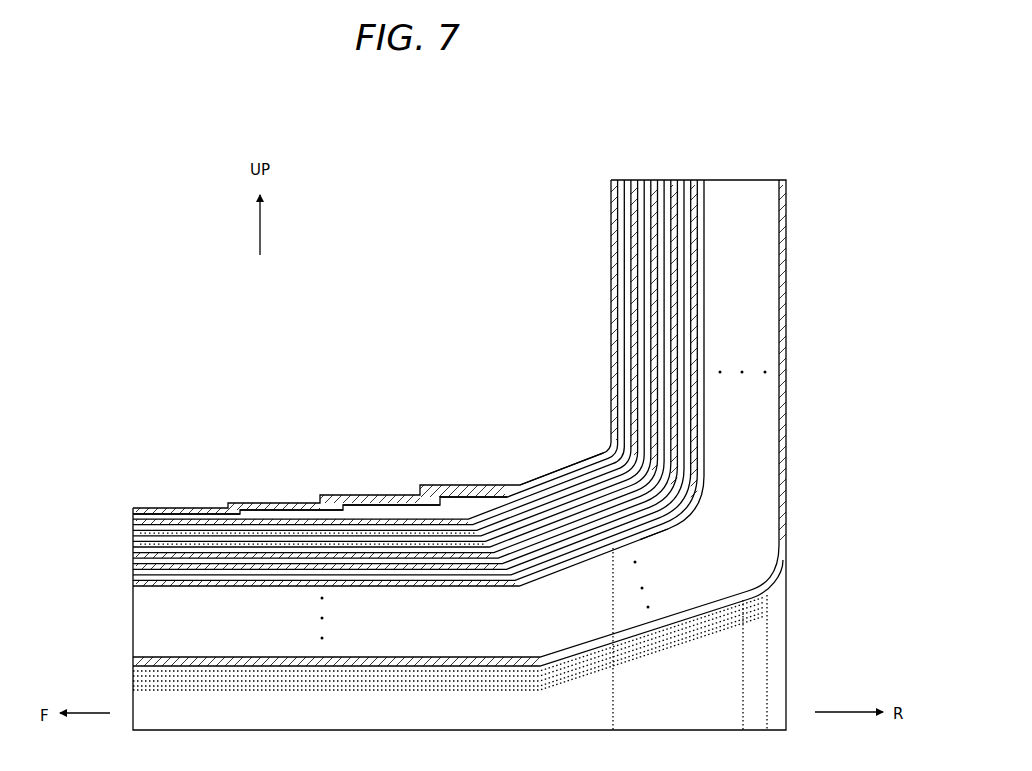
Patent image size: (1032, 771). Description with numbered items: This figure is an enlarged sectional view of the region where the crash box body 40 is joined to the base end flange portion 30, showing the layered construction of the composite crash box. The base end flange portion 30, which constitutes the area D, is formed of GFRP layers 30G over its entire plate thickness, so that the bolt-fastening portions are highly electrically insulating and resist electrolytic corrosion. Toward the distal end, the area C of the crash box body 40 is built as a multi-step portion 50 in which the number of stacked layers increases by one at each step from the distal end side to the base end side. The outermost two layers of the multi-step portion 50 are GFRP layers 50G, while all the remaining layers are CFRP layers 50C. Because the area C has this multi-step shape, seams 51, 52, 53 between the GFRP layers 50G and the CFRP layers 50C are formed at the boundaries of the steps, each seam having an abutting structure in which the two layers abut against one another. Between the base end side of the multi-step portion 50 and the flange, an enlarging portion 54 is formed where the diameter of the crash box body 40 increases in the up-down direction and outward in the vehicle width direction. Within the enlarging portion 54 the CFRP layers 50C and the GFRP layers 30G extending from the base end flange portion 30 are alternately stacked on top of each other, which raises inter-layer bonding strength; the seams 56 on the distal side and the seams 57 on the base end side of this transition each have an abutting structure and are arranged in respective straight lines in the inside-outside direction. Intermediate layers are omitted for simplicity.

The base end flange portion 30 is at (605, 224).
The GFRP layers 30G is at (648, 323).
The crash box body 40 is at (418, 383).
The multi-step portion 50 is at (418, 383).
The GFRP layers 50G is at (190, 522).
The CFRP layers 50C is at (410, 540).
The seam 51 is at (262, 528).
The seam 52 is at (345, 528).
The seam 53 is at (478, 540).
The enlarging portion 54 is at (593, 432).
The seams 56 is at (530, 560).
The seams 57 is at (650, 520).
The area D is at (612, 285).
The area C is at (398, 508).